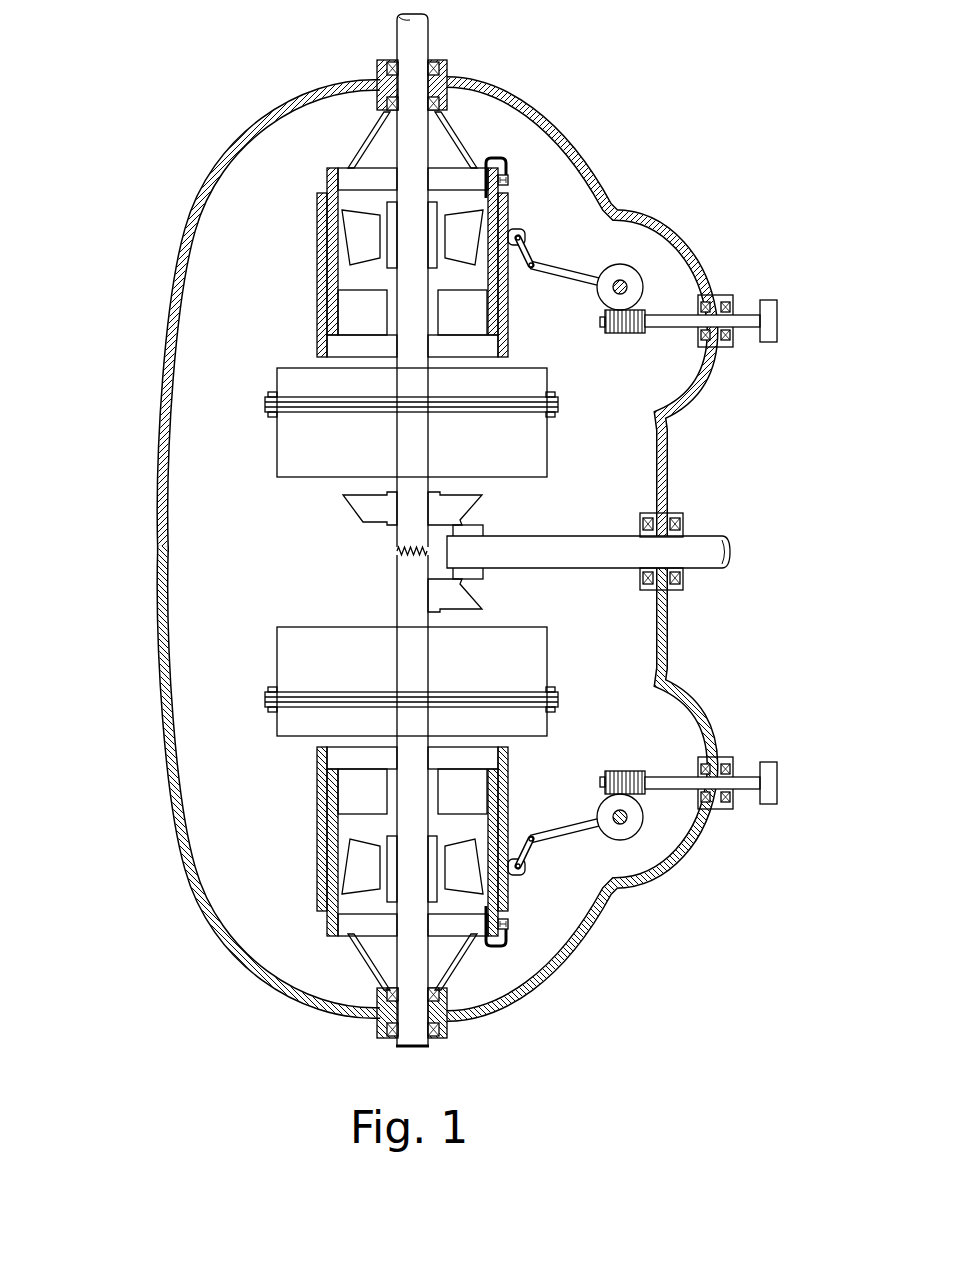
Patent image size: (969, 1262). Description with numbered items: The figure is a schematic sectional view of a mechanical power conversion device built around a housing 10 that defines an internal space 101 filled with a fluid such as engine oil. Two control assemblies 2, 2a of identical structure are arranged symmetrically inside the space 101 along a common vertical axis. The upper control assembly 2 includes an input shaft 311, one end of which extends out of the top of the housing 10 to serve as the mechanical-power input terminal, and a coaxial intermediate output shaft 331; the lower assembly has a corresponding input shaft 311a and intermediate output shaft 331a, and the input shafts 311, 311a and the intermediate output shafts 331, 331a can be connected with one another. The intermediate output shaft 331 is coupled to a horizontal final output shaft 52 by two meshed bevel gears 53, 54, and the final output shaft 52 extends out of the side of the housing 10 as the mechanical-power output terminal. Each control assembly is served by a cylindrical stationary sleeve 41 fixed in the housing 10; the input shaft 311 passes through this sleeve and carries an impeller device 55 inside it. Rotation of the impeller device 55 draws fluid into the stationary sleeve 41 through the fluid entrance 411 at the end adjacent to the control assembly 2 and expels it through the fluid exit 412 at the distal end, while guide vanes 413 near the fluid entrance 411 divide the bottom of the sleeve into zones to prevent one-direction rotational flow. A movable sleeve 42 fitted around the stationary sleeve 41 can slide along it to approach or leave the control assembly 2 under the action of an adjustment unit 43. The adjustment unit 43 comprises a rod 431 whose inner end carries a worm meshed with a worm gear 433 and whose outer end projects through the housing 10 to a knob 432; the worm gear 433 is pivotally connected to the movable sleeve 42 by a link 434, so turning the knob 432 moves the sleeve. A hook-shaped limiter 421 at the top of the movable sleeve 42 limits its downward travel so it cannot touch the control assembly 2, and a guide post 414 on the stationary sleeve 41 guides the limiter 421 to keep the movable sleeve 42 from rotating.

The housing 10 is at (227, 930).
The space 101 is at (240, 440).
The control assembly 2 is at (268, 380).
The control assembly 2a is at (268, 726).
The input shaft 311 is at (403, 142).
The input shaft 311a is at (413, 958).
The intermediate output shaft 331 is at (410, 535).
The intermediate output shaft 331a is at (410, 597).
The stationary sleeve 41 is at (434, 217).
The fluid entrance 411 is at (362, 347).
The fluid exit 412 is at (337, 160).
The guide vanes 413 is at (362, 272).
The guide post 414 is at (513, 182).
The movable sleeve 42 is at (510, 347).
The limiter 421 is at (518, 182).
The adjustment unit 43 is at (685, 222).
The rod 431 is at (670, 318).
The knob 432 is at (772, 322).
The worm gear 433 is at (624, 272).
The link 434 is at (530, 243).
The final output shaft 52 is at (593, 557).
The bevel gear 53 is at (373, 505).
The bevel gear 54 is at (473, 522).
The impeller device 55 is at (460, 210).